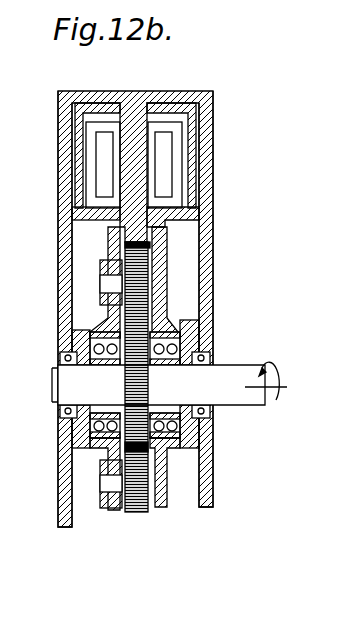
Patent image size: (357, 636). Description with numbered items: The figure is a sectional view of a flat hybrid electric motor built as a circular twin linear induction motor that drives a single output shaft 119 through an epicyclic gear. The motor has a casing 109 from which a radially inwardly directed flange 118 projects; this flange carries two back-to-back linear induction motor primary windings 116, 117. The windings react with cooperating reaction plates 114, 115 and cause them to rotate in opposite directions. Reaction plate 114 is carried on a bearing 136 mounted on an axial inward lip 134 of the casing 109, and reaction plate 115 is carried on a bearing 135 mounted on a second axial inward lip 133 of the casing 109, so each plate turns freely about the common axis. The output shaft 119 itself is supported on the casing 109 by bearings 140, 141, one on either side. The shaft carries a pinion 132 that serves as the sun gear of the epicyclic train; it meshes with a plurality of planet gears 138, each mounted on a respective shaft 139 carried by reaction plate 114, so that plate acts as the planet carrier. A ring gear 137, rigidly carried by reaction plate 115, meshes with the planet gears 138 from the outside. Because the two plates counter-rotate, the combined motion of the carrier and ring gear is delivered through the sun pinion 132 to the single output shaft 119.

The casing 109 is at (66, 237).
The reaction plate 114 is at (93, 222).
The reaction plate 115 is at (193, 146).
The linear induction motor primary winding 116 is at (102, 165).
The linear induction motor primary winding 117 is at (166, 173).
The radially inwardly directed flange 118 is at (128, 103).
The output shaft 119 is at (279, 386).
The pinion 132 is at (115, 358).
The axial inward lip 133 is at (213, 364).
The axial inward lip 134 is at (100, 373).
The bearing 135 is at (167, 337).
The bearing 136 is at (112, 340).
The ring gear 137 is at (140, 233).
The planet gears 138 is at (150, 265).
The shafts 139 is at (100, 285).
The bearing 140 is at (64, 351).
The bearing 141 is at (213, 405).